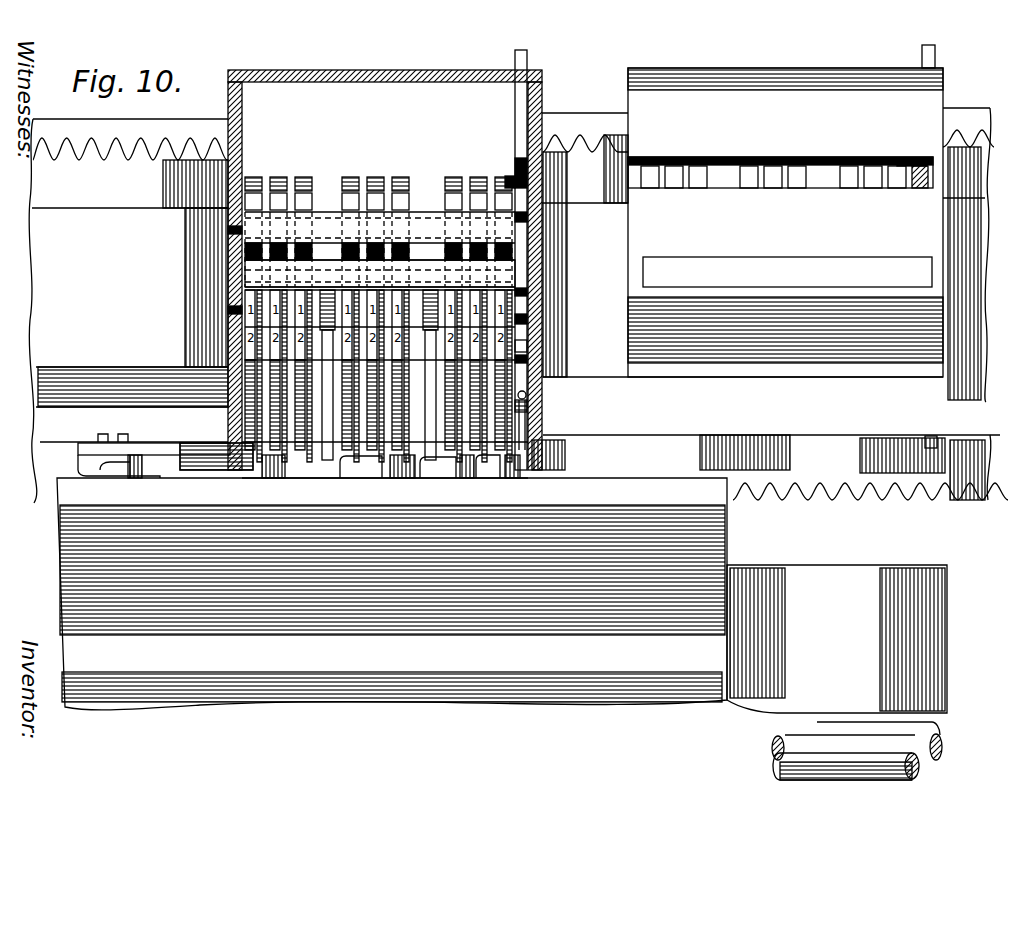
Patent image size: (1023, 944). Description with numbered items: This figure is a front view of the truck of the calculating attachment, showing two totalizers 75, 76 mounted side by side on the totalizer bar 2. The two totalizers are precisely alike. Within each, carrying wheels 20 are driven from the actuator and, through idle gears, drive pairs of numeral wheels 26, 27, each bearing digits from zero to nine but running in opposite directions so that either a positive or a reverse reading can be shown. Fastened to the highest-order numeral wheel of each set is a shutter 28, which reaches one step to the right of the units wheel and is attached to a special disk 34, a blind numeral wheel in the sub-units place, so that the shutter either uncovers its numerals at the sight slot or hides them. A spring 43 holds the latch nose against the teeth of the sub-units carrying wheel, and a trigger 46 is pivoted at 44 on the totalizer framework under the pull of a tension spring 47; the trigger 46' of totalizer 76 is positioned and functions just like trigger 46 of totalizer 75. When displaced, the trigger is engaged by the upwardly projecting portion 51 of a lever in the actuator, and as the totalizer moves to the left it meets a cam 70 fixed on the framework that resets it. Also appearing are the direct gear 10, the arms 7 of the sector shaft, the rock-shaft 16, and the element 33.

The totalizer 75 is at (403, 70).
The totalizer 76 is at (742, 68).
The numeral wheel 26 is at (397, 177).
The shutter 28 is at (431, 265).
The special disk 34 is at (507, 178).
The spring 43 is at (544, 180).
The totalizer bar 2 is at (977, 263).
The numeral wheel 27 is at (547, 322).
The pivot 44 is at (548, 350).
The tension spring 47 is at (552, 362).
The lever 33 is at (550, 405).
The trigger 46 is at (552, 422).
The trigger 46' is at (912, 423).
The direct gear 10 is at (229, 457).
The cam 70 is at (367, 465).
The upwardly projecting portion 51 is at (430, 463).
The carrying wheel 20 is at (485, 460).
The arm 7 is at (828, 573).
The rock-shaft 16 is at (934, 729).